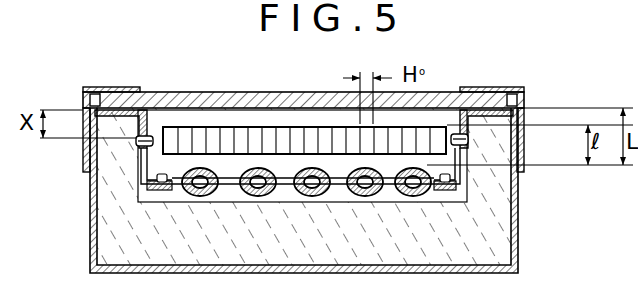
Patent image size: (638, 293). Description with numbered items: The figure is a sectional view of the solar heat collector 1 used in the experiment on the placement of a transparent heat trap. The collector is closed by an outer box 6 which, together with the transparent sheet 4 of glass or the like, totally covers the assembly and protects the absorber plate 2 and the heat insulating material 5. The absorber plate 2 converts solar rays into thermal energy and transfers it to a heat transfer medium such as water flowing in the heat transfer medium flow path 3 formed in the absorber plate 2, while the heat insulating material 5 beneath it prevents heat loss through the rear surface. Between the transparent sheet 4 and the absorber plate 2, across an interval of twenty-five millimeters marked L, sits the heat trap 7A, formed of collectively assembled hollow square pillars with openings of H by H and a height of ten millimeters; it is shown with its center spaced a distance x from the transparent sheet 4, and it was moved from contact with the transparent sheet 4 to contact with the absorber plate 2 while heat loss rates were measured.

The solar heat collector 1 is at (76, 118).
The absorber plate 2 is at (292, 140).
The heat transfer medium flow path 3 is at (199, 180).
The transparent sheet 4 is at (244, 100).
The heat insulating material 5 is at (398, 244).
The outer box 6 is at (518, 222).
The heat trap 7A is at (426, 126).